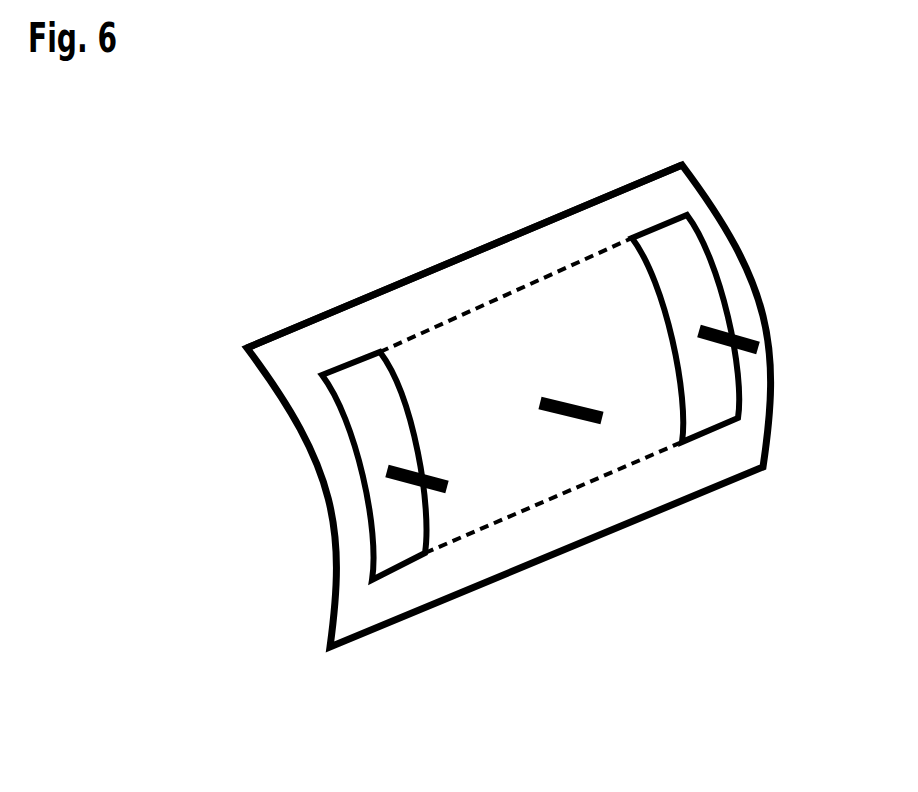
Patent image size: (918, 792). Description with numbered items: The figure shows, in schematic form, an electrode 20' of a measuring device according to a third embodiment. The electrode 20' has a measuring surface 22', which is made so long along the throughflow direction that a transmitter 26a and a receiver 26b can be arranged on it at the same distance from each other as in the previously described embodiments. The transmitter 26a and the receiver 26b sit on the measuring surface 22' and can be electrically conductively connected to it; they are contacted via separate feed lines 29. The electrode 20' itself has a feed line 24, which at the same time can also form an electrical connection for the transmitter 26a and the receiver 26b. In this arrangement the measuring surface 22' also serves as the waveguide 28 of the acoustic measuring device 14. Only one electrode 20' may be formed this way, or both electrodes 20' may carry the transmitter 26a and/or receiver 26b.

The electrode 20' is at (434, 406).
The acoustic measuring device 14 is at (408, 322).
The measuring surface 22' is at (506, 269).
The waveguide 28 is at (563, 295).
The transmitter 26a is at (355, 377).
The receiver 26b is at (668, 248).
The feed lines 29 is at (447, 490).
The feed line 24 is at (605, 423).